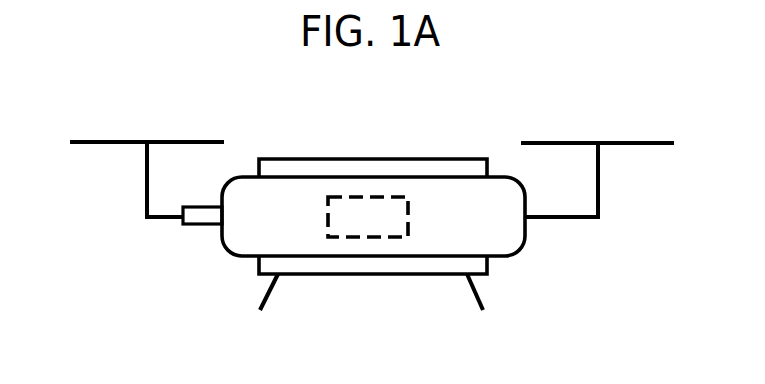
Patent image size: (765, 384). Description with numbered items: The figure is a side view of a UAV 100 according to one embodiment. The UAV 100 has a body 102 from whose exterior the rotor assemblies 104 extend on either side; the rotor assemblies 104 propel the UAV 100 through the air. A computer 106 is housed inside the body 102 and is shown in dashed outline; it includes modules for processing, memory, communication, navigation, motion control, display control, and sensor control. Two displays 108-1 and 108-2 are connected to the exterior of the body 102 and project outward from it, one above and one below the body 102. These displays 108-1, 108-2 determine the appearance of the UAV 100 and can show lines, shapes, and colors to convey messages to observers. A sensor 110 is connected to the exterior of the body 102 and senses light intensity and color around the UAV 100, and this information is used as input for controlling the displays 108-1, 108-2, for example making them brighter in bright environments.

The UAV 100 is at (505, 105).
The body 102 is at (518, 250).
The rotor assemblies 104 is at (145, 179).
The computer 106 is at (353, 237).
The display 108-1 is at (373, 159).
The display 108-2 is at (392, 274).
The sensor 110 is at (200, 228).